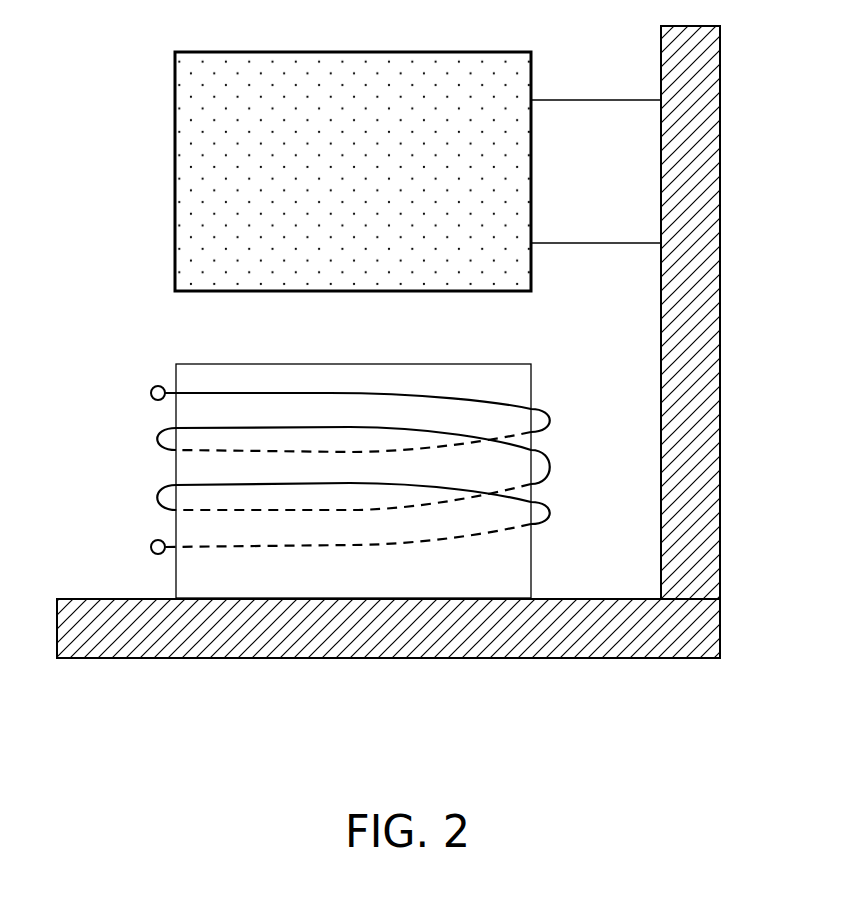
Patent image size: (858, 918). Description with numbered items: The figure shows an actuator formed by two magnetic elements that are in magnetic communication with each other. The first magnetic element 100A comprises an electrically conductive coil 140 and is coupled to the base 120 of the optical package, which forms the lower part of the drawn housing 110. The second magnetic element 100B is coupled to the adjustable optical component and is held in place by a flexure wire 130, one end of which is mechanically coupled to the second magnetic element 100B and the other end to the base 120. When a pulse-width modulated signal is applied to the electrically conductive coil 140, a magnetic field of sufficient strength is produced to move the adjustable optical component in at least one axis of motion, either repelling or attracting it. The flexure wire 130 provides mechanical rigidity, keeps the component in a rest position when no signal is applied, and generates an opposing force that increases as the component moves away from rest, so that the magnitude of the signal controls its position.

The housing 110 is at (735, 400).
The base 120 is at (433, 660).
The flexure wire 130 is at (603, 97).
The first magnetic element 100A is at (176, 480).
The second magnetic element 100B is at (175, 181).
The electrically conductive coil 140 is at (551, 420).